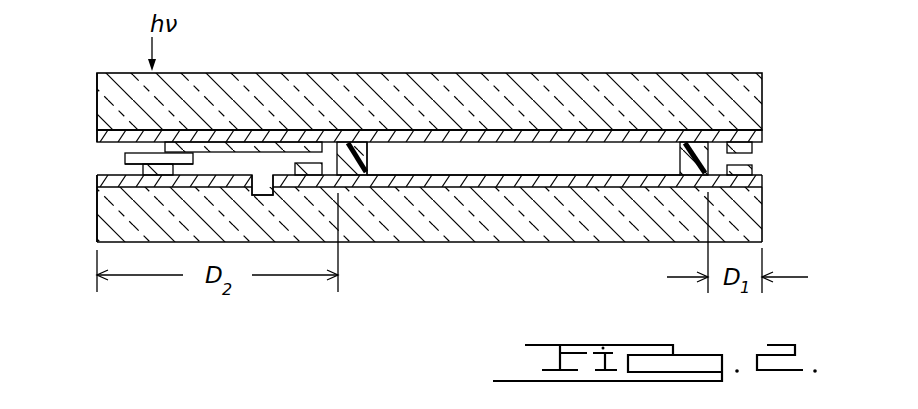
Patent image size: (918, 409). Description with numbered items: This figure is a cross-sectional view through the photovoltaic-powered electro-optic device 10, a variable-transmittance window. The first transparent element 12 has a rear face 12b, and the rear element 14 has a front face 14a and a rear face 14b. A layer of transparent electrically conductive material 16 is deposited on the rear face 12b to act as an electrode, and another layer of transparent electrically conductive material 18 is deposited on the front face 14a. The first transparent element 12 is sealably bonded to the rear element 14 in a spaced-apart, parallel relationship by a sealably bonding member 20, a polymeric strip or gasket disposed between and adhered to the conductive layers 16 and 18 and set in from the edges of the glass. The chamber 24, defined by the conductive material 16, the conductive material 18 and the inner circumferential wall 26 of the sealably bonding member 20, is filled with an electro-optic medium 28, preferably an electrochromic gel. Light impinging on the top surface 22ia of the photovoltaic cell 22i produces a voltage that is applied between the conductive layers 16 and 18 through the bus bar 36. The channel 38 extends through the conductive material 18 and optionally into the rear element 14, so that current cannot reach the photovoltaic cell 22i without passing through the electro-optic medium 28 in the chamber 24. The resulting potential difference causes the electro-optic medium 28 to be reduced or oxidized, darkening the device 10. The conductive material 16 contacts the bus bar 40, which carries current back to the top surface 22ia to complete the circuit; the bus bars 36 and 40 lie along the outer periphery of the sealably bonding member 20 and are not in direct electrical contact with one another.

The photovoltaic-powered electro-optic device 10 is at (214, 317).
The first transparent element 12 is at (737, 82).
The rear face of first transparent element 12b is at (675, 137).
The rear element 14 is at (762, 232).
The front face of rear element 14a is at (608, 184).
The rear face of rear element 14b is at (560, 243).
The transparent electrically conductive material 16 is at (758, 130).
The transparent electrically conductive material 18 is at (762, 183).
The sealably bonding member 20 is at (348, 143).
The photovoltaic cell 22i is at (116, 162).
The top surface of photovoltaic cell 22ia is at (130, 152).
The chamber 24 is at (483, 169).
The inner circumferential wall 26 is at (366, 165).
The electro-optic medium 28 is at (537, 162).
The bus bar 36 is at (152, 168).
The channel 38 is at (263, 188).
The bus bar 40 is at (237, 145).